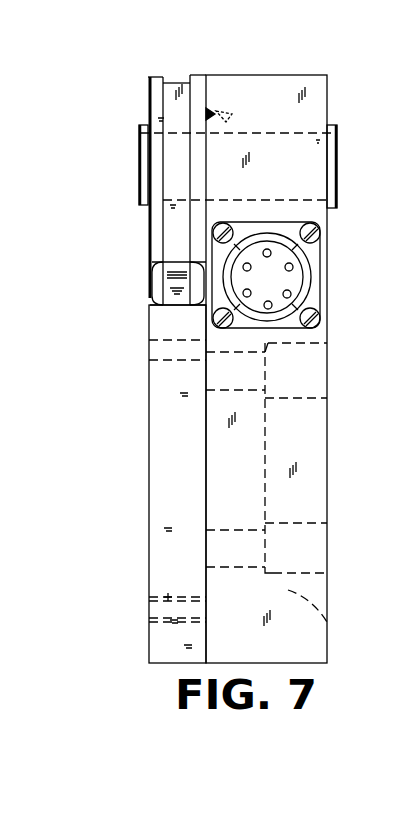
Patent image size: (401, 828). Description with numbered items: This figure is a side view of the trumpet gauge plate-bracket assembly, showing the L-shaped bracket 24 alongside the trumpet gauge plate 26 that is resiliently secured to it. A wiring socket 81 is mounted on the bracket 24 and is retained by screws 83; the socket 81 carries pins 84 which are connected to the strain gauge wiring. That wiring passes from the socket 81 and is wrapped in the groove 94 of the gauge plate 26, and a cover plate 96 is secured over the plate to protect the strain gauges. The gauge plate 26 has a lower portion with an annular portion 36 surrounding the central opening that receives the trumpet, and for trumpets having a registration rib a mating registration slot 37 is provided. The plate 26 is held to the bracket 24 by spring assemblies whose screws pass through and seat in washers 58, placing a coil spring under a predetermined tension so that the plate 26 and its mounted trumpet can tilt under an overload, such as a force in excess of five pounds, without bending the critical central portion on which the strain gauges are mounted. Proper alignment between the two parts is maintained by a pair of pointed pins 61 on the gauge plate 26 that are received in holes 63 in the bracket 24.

The bracket 24 is at (338, 637).
The trumpet gauge plate 26 is at (130, 357).
The annular portion 36 is at (147, 612).
The registration slot 37 is at (168, 595).
The washers 58 is at (140, 150).
The pointed pins 61 is at (230, 95).
The holes 63 is at (234, 116).
The wiring socket 81 is at (313, 278).
The screws 83 is at (313, 222).
The pins 84 is at (292, 296).
The groove 94 is at (175, 83).
The cover plate 96 is at (150, 275).